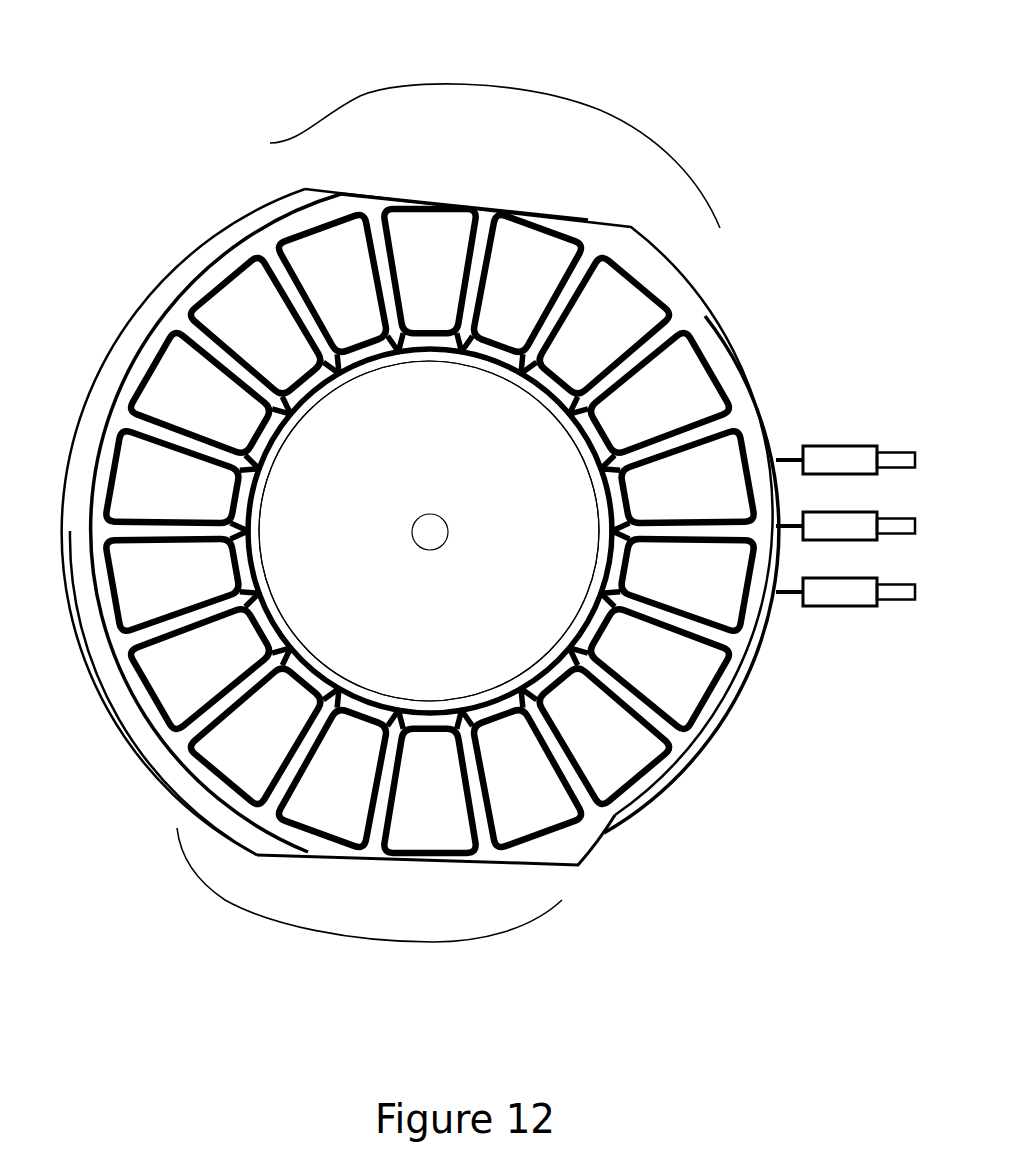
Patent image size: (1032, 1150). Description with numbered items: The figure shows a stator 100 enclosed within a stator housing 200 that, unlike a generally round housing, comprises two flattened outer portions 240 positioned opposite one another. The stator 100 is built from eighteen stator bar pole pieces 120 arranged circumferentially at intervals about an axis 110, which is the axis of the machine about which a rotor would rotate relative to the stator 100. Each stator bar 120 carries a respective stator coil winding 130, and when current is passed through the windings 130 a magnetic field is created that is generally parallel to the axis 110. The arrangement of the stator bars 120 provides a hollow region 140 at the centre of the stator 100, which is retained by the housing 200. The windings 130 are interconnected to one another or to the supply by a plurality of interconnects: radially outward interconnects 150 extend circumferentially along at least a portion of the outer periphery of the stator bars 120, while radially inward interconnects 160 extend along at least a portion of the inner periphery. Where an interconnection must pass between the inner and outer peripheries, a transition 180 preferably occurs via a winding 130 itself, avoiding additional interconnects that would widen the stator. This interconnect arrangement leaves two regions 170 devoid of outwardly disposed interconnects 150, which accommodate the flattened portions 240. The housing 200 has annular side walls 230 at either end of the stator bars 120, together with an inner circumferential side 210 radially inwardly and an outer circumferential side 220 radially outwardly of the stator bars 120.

The stator 100 is at (205, 200).
The axis 110 is at (426, 512).
The stator bar pole piece 120 is at (522, 238).
The stator coil winding 130 is at (422, 200).
The hollow region 140 is at (318, 493).
The radially outward electrical interconnect 150 is at (128, 365).
The radially inward electrical interconnect 160 is at (275, 622).
The region devoid of outwardly disposed interconnects 170 is at (534, 106).
The transition 180 is at (600, 806).
The stator housing 200 is at (752, 299).
The inner circumferential side 210 is at (562, 430).
The outer circumferential side 220 is at (137, 752).
The annular side wall 230 is at (593, 838).
The flattened outer portion 240 is at (580, 215).